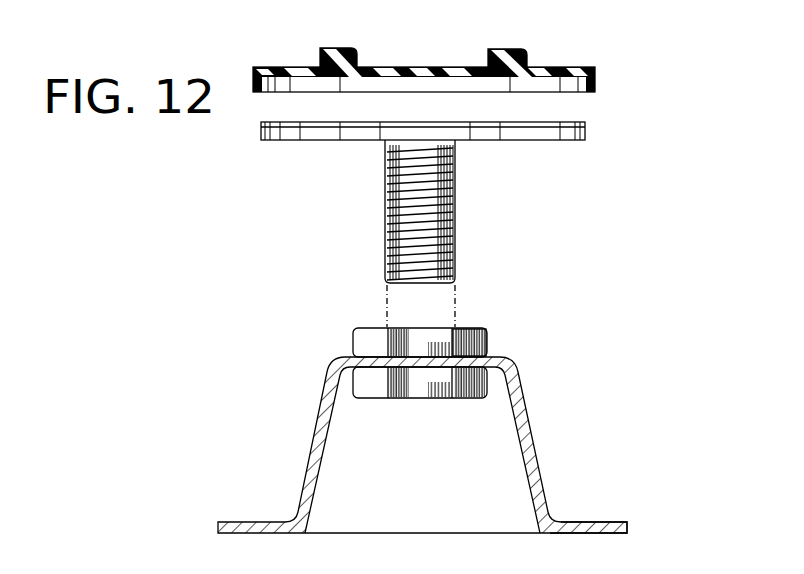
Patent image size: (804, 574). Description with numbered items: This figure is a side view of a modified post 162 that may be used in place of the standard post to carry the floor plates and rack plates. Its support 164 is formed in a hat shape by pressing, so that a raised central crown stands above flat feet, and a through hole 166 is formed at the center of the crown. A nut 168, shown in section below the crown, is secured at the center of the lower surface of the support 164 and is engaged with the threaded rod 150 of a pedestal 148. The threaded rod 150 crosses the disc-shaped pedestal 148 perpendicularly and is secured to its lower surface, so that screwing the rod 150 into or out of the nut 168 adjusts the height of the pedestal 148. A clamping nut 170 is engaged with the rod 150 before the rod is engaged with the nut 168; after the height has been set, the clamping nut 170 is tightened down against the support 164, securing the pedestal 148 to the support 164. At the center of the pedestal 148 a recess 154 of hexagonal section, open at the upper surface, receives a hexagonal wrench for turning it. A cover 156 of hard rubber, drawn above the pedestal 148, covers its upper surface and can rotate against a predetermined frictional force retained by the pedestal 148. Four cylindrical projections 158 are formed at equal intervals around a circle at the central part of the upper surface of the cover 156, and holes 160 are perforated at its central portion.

The pedestal 148 is at (562, 140).
The threaded rod 150 is at (385, 198).
The recess 154 is at (413, 178).
The cover 156 is at (585, 74).
The cylindrical projections 158 is at (340, 47).
The holes 160 is at (428, 67).
The post 162 is at (545, 446).
The support 164 is at (553, 523).
The through hole 166 is at (395, 330).
The nut 168 is at (423, 398).
The clamping nut 170 is at (485, 330).